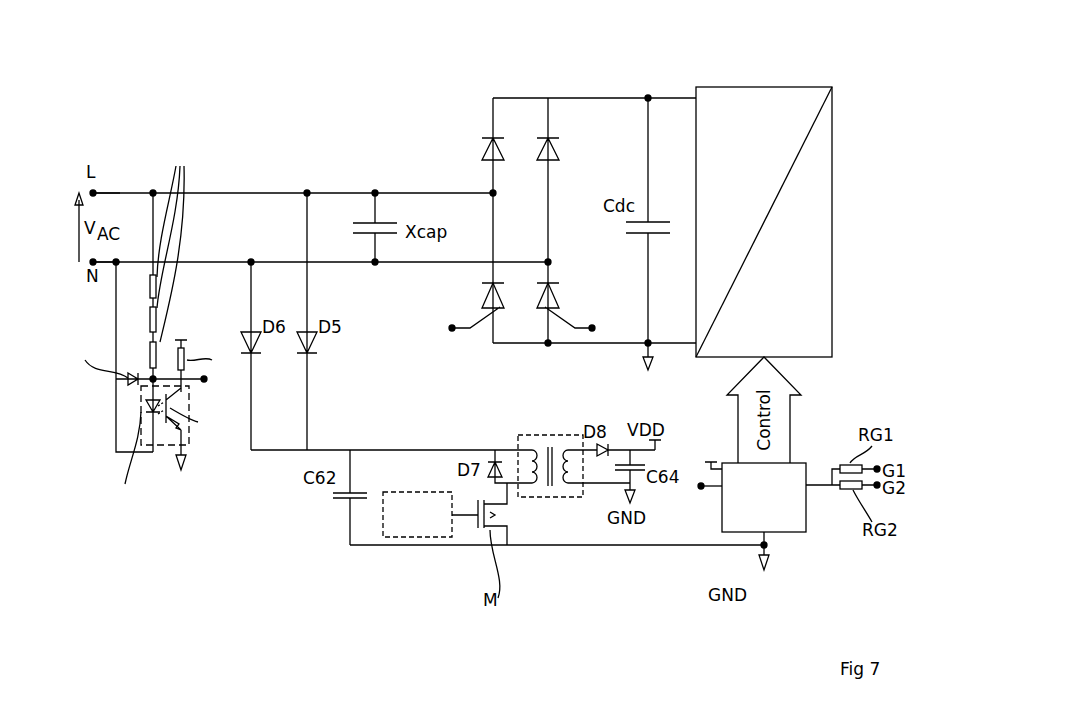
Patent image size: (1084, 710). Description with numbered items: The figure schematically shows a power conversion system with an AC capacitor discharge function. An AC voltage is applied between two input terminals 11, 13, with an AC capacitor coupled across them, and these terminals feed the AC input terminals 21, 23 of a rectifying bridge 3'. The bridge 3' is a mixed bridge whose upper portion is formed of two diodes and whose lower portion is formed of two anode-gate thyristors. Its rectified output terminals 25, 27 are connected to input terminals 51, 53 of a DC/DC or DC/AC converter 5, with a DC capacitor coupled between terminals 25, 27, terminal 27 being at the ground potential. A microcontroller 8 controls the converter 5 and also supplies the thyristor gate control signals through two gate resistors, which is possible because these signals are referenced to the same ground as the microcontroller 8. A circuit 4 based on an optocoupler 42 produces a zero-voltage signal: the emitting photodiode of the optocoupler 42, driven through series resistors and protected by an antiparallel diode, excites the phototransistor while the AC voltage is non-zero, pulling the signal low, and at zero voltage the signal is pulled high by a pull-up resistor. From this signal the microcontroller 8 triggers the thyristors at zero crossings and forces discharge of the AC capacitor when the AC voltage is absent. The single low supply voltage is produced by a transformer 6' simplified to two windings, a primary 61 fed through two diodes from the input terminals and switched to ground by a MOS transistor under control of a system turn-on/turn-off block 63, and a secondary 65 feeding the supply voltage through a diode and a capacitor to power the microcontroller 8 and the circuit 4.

The rectifying bridge 3' is at (534, 173).
The rectified output terminal 25 is at (647, 97).
The input terminal of converter 51 is at (697, 98).
The DC/DC or DC/AC converter 5 is at (780, 86).
The input terminal 11 is at (95, 193).
The input terminal 13 is at (93, 265).
The AC input terminal of rectifying bridge 21 is at (492, 192).
The AC input terminal of rectifying bridge 23 is at (550, 262).
The input terminal of converter 53 is at (693, 343).
The rectified output terminal 27 is at (654, 346).
The circuit 4 is at (153, 359).
The optocoupler 42 is at (168, 445).
The transformer 6' is at (552, 463).
The first winding or primary 61 is at (527, 447).
The secondary winding 65 is at (566, 447).
The system turn-on/turn-off block 63 is at (405, 537).
The microcontroller 8 is at (797, 463).